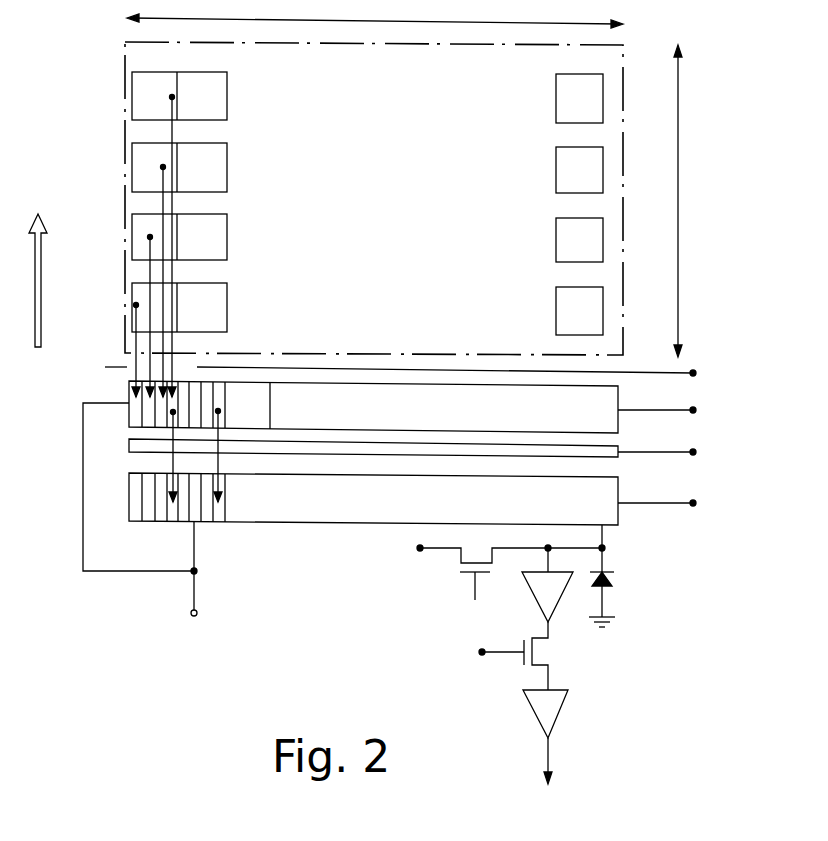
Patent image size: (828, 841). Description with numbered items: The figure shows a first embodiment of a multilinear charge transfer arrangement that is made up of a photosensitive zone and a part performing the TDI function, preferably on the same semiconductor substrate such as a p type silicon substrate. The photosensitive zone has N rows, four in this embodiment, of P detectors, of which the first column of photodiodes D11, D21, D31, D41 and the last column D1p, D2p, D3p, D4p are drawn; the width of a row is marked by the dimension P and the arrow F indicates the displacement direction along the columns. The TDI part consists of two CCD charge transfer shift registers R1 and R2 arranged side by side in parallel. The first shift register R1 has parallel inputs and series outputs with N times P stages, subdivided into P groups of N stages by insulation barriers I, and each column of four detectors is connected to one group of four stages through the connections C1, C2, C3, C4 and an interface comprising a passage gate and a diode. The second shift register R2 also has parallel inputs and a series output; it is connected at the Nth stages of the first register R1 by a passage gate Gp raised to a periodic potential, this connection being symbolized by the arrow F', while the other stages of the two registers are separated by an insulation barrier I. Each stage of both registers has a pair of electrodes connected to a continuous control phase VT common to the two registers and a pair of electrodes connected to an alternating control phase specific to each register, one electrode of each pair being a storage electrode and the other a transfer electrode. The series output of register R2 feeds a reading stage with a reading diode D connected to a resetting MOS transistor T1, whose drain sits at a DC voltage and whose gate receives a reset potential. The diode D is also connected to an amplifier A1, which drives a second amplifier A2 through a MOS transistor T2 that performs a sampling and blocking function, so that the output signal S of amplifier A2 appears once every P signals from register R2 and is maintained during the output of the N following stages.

The number of detectors per row P is at (375, 14).
The displacement direction arrow F is at (44, 280).
The photosensitive detector D41 is at (132, 86).
The photosensitive detector D31 is at (132, 158).
The photosensitive detector D21 is at (132, 228).
The photosensitive detector D11 is at (132, 298).
The connection C4 is at (172, 127).
The connection C3 is at (163, 198).
The connection C2 is at (150, 268).
The connection C1 is at (132, 332).
The photosensitive detector D4p is at (603, 107).
The photosensitive detector D3p is at (603, 180).
The photosensitive detector D2p is at (603, 252).
The photosensitive detector D1p is at (603, 325).
The insulation barrier I is at (176, 367).
The first charge transfer shift register R1 is at (618, 393).
The passage gate Gp is at (618, 447).
The second charge transfer shift register R2 is at (618, 488).
The connection arrow F' is at (159, 456).
The continuous control phase VT is at (160, 515).
The resetting MOS transistor T1 is at (509, 578).
The amplifier A1 is at (555, 607).
The reading diode D is at (612, 580).
The MOS transistor T2 is at (546, 655).
The second amplifier A2 is at (559, 717).
The output signal S is at (564, 790).